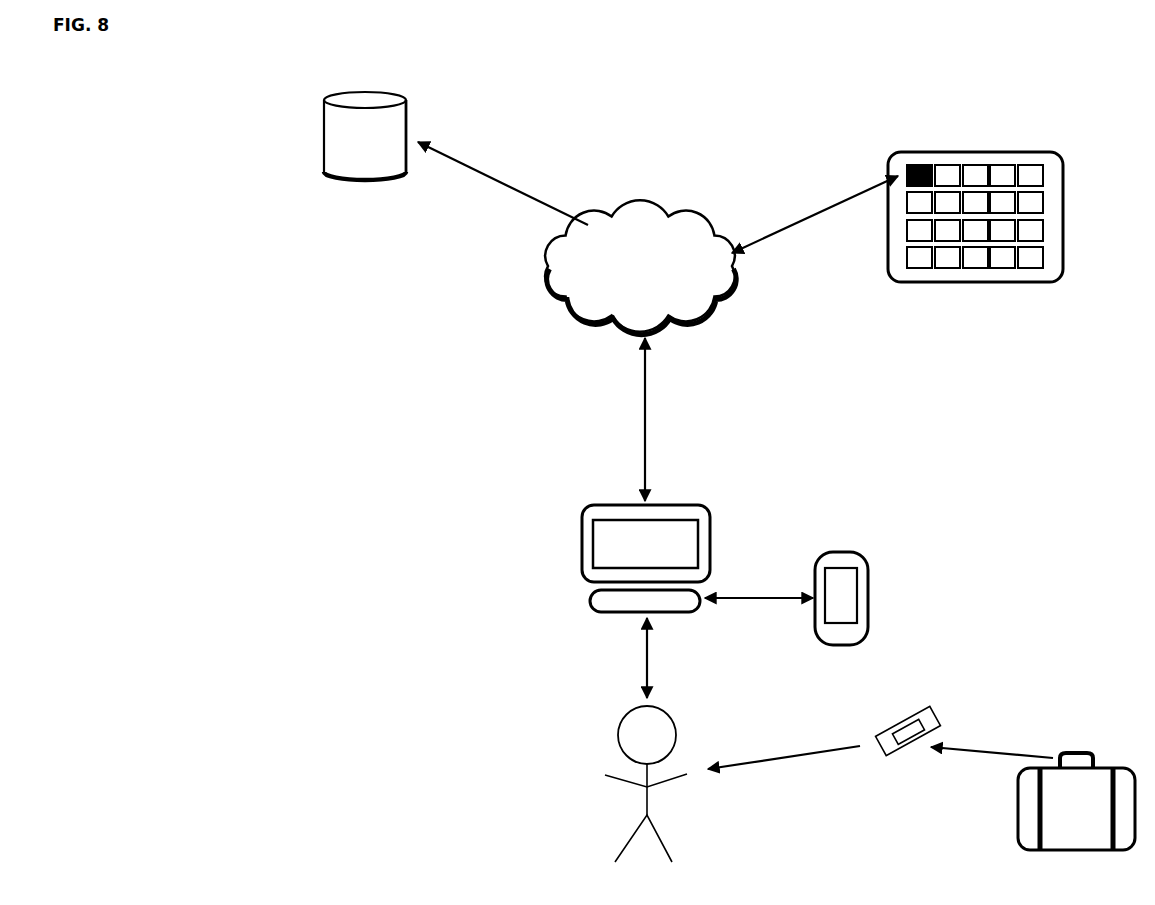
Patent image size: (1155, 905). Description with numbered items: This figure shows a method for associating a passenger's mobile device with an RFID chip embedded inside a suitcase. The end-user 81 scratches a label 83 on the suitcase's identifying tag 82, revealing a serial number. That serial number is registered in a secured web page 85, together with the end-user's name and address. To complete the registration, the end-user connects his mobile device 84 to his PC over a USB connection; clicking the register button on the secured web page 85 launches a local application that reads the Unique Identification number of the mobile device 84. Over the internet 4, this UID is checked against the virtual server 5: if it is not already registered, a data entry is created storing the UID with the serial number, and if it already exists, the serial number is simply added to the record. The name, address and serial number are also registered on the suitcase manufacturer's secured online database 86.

The internet 4 is at (640, 267).
The virtual server 5 is at (983, 204).
The end-user 81 is at (646, 798).
The identifying tag 82 is at (908, 743).
The label 83 is at (929, 720).
The mobile device 84 is at (858, 598).
The secured web page 85 is at (646, 558).
The secured online database 86 is at (365, 136).